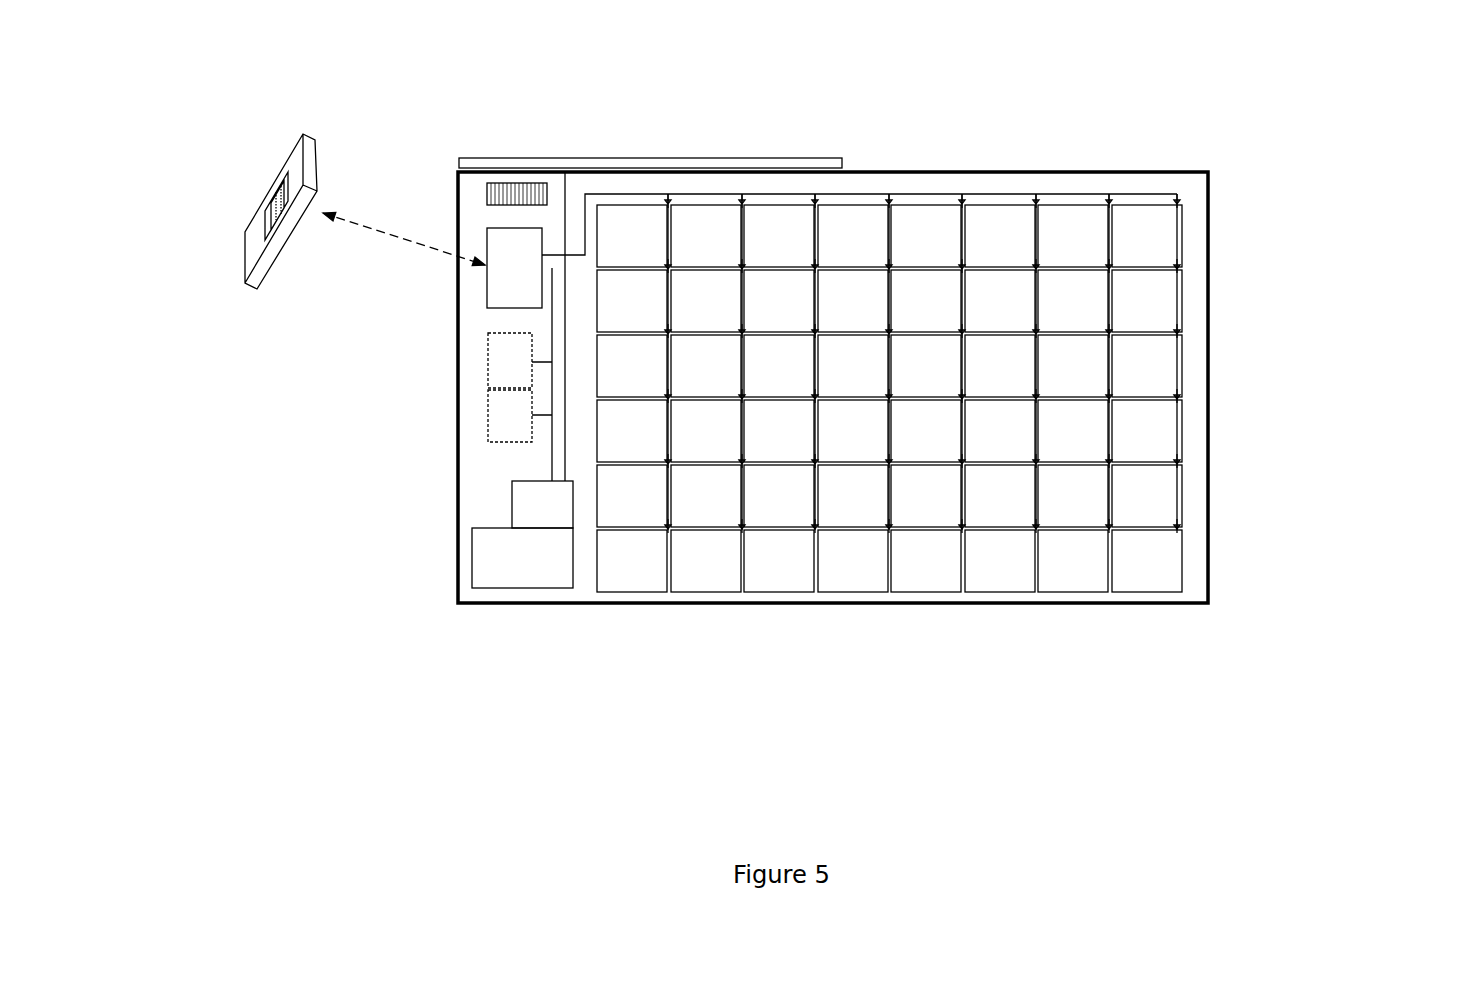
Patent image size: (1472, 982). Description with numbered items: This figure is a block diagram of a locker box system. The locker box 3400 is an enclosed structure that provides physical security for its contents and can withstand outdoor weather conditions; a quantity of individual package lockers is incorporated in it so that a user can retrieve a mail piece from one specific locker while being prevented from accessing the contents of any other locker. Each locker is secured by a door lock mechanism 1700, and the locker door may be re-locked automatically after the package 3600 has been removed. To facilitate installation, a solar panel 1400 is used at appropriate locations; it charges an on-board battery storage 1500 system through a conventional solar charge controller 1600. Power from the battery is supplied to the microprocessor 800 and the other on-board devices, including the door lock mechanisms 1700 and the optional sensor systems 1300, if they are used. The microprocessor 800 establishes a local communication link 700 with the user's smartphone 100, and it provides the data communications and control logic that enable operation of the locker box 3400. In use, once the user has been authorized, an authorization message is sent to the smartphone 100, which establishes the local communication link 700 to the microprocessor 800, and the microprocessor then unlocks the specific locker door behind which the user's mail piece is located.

The smartphone 100 is at (283, 163).
The local communication link 700 is at (378, 252).
The microprocessor 800 is at (487, 312).
The sensor systems 1300 is at (470, 422).
The solar panel 1400 is at (592, 155).
The battery storage 1500 is at (463, 590).
The solar charge controller 1600 is at (466, 506).
The door lock mechanisms 1700 is at (1036, 196).
The locker box 3400 is at (905, 170).
The package 3600 is at (1163, 292).